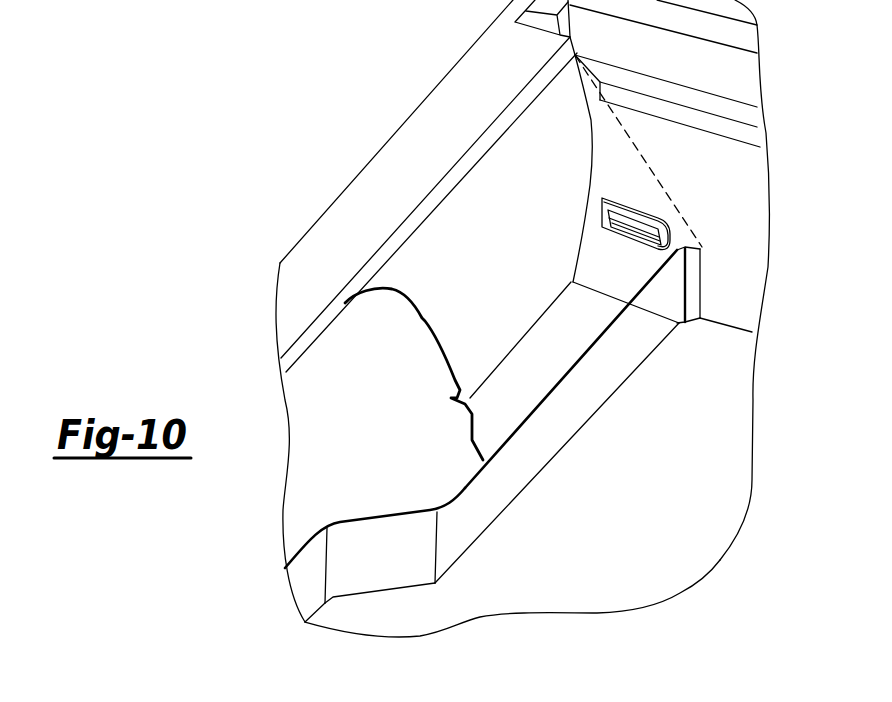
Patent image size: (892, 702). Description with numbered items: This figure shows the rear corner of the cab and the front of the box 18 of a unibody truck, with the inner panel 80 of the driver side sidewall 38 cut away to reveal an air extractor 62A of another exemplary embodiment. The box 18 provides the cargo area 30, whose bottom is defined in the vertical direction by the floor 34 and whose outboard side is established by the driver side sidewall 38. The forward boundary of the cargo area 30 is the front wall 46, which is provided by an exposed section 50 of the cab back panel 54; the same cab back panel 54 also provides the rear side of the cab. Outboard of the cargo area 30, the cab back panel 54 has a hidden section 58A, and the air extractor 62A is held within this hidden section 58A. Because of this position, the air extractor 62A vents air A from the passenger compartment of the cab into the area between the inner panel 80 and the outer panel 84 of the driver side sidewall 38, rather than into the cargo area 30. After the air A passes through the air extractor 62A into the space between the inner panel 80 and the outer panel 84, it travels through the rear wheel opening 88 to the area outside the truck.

The box 18 is at (370, 113).
The driver side sidewall 38 is at (314, 262).
The cargo area 30 is at (667, 463).
The floor 34 is at (666, 553).
The front wall 46 is at (746, 296).
The cab back panel 54 is at (746, 318).
The exposed section 50 is at (721, 300).
The hidden section 58A is at (592, 209).
The air extractor 62A is at (645, 203).
The air A is at (645, 232).
The inner panel 80 is at (307, 582).
The rear wheel opening 88 is at (330, 456).
The outer panel 84 is at (433, 284).